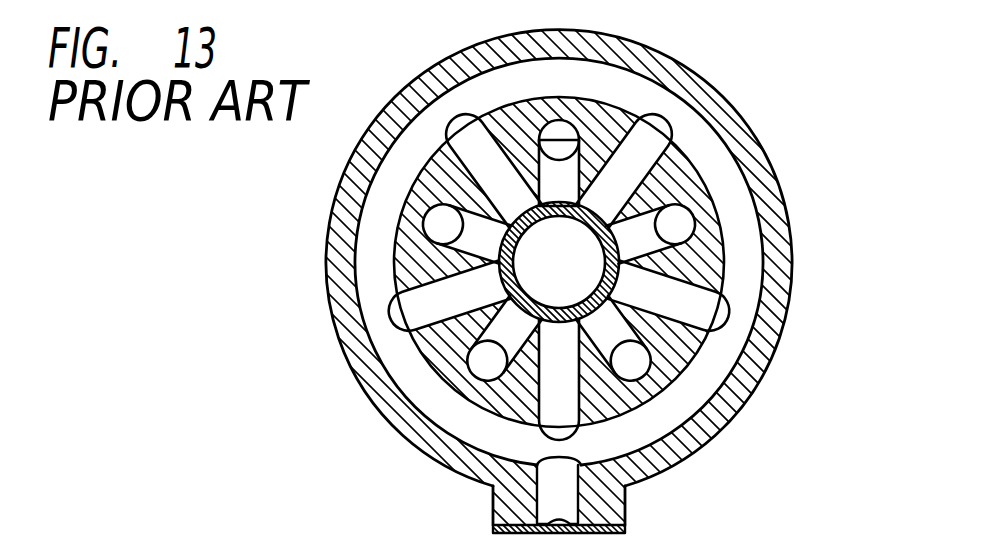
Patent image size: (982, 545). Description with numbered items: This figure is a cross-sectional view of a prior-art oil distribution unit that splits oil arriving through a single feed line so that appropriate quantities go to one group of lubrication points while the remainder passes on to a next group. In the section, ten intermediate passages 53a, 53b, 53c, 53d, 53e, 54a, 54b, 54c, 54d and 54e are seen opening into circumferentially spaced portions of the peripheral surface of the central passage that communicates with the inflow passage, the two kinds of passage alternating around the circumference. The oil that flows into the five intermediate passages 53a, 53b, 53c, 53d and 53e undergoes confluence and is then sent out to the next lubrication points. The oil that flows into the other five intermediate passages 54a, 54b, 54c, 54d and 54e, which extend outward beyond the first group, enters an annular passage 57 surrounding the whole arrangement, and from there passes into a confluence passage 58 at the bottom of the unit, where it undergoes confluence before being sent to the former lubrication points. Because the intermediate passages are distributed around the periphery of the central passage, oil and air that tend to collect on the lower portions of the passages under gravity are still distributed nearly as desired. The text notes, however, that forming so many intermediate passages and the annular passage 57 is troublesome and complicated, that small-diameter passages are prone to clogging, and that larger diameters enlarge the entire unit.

The intermediate passage 53a is at (437, 226).
The intermediate passage 53b is at (484, 367).
The intermediate passage 53c is at (628, 367).
The intermediate passage 53d is at (684, 228).
The intermediate passage 53e is at (562, 137).
The intermediate passage 54a is at (493, 162).
The intermediate passage 54b is at (404, 313).
The intermediate passage 54c is at (546, 385).
The intermediate passage 54d is at (716, 326).
The intermediate passage 54e is at (630, 150).
The annular passage 57 is at (715, 148).
The confluence passage 58 is at (568, 497).